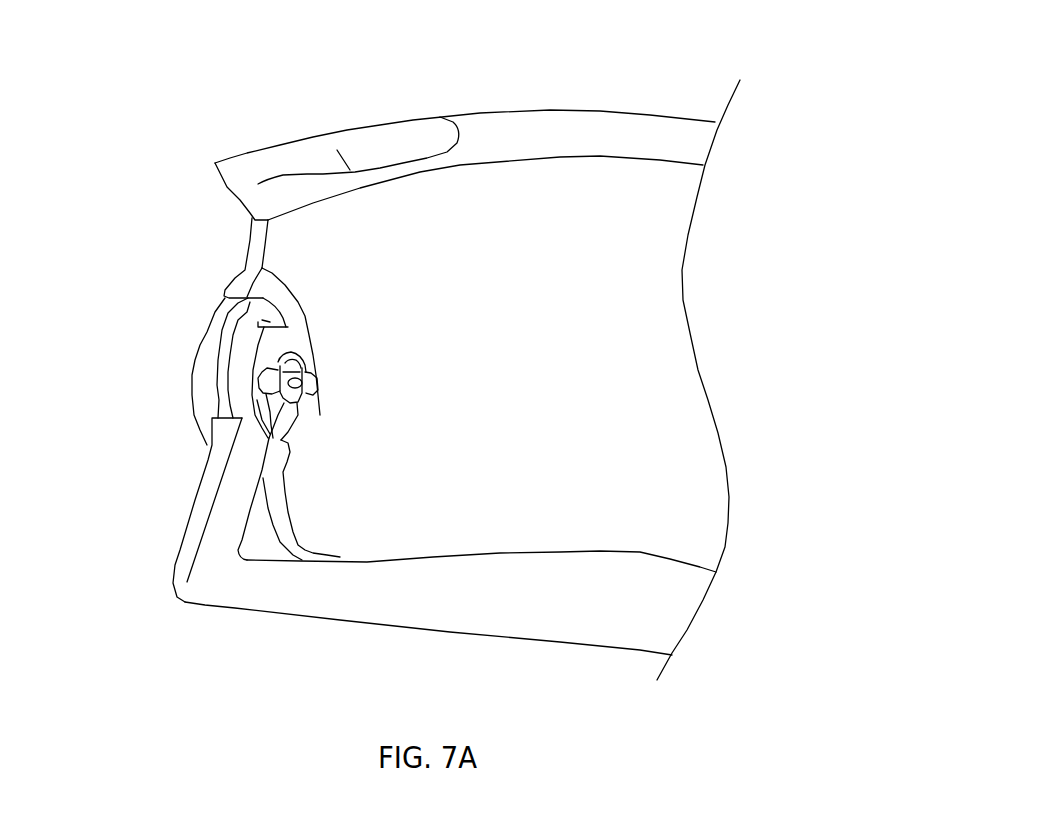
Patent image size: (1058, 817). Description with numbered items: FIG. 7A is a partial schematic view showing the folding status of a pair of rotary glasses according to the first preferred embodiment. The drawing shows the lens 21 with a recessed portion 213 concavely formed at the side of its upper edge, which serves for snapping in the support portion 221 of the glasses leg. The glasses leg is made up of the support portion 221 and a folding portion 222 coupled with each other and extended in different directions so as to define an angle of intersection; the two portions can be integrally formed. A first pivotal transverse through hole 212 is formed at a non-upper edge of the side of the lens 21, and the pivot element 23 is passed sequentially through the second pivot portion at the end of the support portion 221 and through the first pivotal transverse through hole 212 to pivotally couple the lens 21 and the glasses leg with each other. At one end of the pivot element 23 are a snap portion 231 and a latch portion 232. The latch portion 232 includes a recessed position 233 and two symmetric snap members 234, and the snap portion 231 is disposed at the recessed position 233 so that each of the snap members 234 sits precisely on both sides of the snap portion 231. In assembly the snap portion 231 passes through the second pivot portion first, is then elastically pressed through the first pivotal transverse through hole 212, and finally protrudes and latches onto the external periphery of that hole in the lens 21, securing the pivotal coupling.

The lens 21 is at (580, 195).
The recessed portion 213 is at (380, 143).
The pivot element 23 is at (258, 262).
The first pivotal transverse through hole 212 is at (292, 355).
The latch portion 232 is at (283, 354).
The recessed position 233 is at (260, 382).
The snap members 234 is at (259, 390).
The snap portion 231 is at (268, 438).
The support portion 221 is at (223, 530).
The folding portion 222 is at (502, 598).